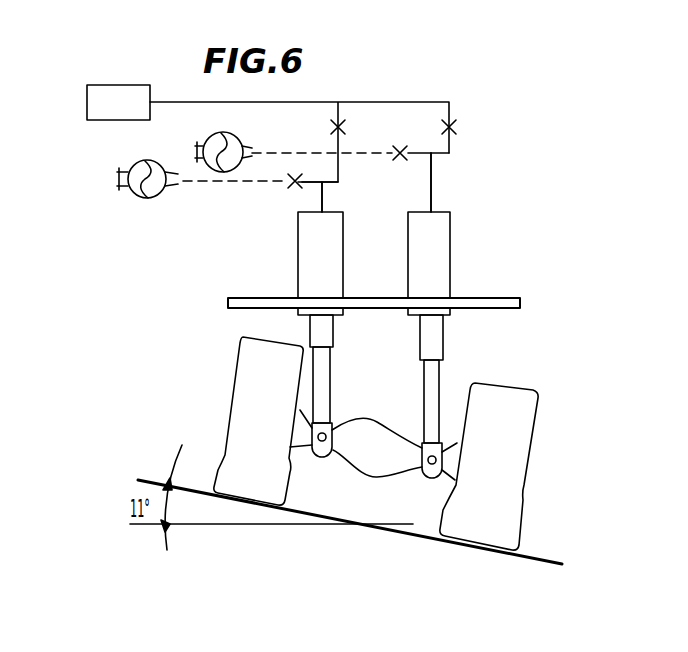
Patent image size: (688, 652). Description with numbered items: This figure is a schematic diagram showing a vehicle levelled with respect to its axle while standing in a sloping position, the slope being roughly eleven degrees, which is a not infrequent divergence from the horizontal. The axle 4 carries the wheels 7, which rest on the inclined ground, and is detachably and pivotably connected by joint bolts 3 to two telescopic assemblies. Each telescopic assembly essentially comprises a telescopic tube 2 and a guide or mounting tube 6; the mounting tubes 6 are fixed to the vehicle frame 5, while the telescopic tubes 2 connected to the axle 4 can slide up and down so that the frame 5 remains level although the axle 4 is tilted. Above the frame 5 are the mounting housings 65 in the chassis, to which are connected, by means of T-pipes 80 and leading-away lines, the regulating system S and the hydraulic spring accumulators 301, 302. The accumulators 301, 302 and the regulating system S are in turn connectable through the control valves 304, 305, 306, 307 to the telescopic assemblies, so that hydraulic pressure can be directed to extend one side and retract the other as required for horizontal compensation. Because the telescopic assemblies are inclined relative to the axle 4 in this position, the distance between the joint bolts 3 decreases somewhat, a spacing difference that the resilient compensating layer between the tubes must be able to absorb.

The regulating system S is at (134, 92).
The hydraulic spring accumulator 301 is at (236, 134).
The hydraulic spring accumulator 302 is at (137, 199).
The control valve 304 is at (290, 186).
The control valve 305 is at (346, 128).
The control valve 306 is at (395, 156).
The control valve 307 is at (457, 128).
The T-pipe 80 is at (322, 204).
The mounting housing 65 is at (298, 266).
The vehicle frame 5 is at (228, 298).
The mounting tube 6 is at (334, 326).
The telescopic tube 2 is at (330, 385).
The joint bolt 3 is at (320, 458).
The axle 4 is at (405, 458).
The wheel 7 is at (243, 370).